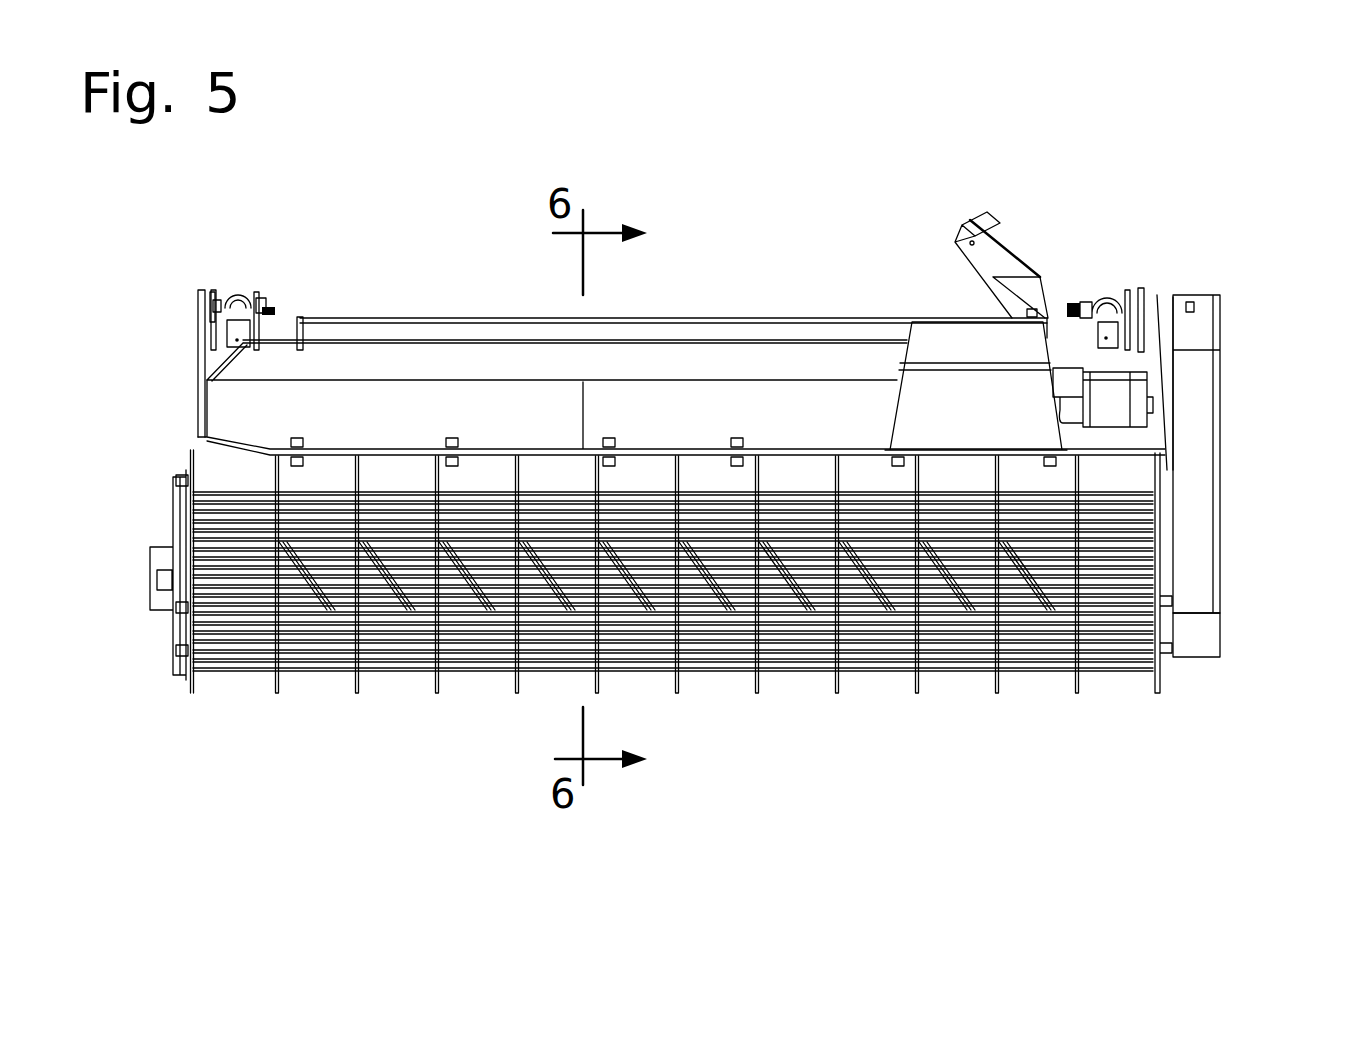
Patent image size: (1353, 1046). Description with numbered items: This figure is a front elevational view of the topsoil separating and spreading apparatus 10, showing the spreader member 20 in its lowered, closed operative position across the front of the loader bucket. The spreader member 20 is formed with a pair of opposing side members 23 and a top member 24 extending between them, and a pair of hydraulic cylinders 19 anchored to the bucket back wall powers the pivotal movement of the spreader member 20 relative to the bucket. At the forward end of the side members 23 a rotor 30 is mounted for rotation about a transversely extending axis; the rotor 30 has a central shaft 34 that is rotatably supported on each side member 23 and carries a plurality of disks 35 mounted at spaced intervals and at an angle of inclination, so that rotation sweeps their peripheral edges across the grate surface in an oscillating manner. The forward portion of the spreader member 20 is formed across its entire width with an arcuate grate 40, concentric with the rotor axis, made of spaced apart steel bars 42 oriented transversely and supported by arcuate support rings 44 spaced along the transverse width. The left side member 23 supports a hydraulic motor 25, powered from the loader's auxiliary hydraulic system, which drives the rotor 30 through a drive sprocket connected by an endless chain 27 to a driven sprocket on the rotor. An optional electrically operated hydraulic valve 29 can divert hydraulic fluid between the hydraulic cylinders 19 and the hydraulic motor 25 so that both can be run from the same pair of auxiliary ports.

The topsoil separating and spreading apparatus 10 is at (888, 801).
The hydraulic cylinders 19 is at (240, 292).
The spreader member 20 is at (418, 811).
The side members 23 is at (1213, 420).
The top member 24 is at (536, 366).
The hydraulic motor 25 is at (1113, 410).
The endless chain 27 is at (1223, 669).
The electrically operated hydraulic valve 29 is at (911, 293).
The rotor 30 is at (239, 522).
The central shaft 34 is at (162, 555).
The disks 35 is at (832, 545).
The arcuate grate 40 is at (405, 680).
The steel bars 42 is at (878, 590).
The arcuate support rings 44 is at (918, 688).